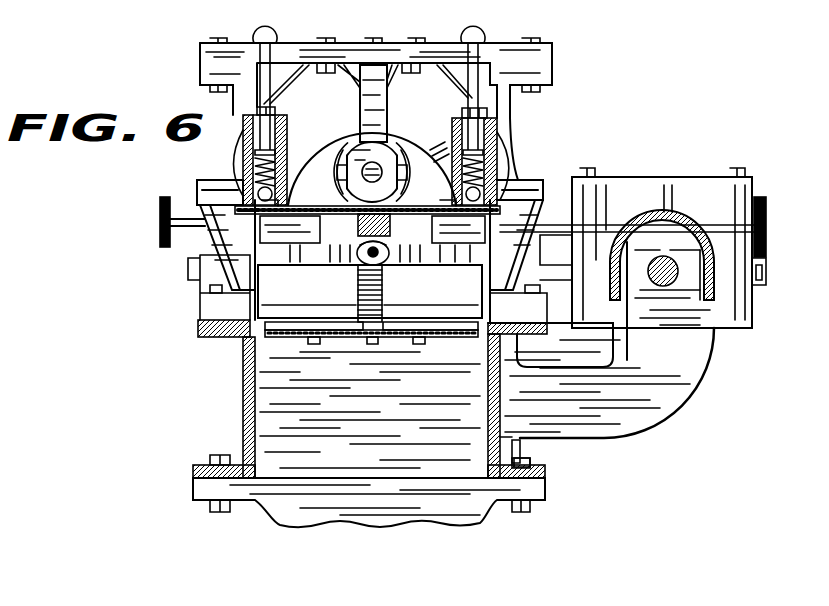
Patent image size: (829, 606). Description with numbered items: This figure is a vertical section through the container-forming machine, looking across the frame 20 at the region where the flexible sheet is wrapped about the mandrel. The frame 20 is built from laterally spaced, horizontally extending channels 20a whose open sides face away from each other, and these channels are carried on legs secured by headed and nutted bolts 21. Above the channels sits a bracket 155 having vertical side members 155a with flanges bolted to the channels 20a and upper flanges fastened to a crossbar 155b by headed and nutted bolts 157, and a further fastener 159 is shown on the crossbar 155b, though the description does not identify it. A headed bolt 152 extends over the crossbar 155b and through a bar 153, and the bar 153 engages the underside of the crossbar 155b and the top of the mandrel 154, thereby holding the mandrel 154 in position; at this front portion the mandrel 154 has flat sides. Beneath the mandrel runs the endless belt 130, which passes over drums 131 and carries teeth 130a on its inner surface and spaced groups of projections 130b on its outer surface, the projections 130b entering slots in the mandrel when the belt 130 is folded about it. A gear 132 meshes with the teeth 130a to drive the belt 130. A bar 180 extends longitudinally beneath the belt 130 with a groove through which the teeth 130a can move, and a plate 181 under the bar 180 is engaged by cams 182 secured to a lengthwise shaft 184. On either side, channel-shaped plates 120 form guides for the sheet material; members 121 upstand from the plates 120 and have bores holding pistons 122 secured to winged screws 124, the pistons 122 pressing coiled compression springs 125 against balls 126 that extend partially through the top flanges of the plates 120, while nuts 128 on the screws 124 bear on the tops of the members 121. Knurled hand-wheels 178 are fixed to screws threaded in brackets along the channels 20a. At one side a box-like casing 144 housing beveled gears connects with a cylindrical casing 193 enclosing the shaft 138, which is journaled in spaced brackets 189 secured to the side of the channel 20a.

The frame 20 is at (243, 415).
The channels 20a is at (243, 395).
The headed and nutted bolts 21 is at (215, 455).
The plates 120 is at (230, 182).
The members 121 is at (290, 128).
The pistons 122 is at (453, 148).
The screws 124 is at (282, 60).
The coiled compression springs 125 is at (240, 165).
The balls 126 is at (503, 224).
The nuts 128 is at (257, 112).
The endless belt 130 is at (300, 222).
The teeth 130a is at (410, 208).
The projections 130b is at (370, 345).
The drums 131 is at (295, 320).
The gear 132 is at (383, 297).
The shaft 138 is at (668, 288).
The box-like casing 144 is at (724, 178).
The headed bolt 152 is at (369, 37).
The bar 153 is at (387, 110).
The mandrel 154 is at (365, 142).
The bracket 155 is at (556, 51).
The vertical side members 155a is at (512, 109).
The crossbar 155b is at (256, 43).
The headed and nutted bolts 157 is at (213, 37).
The bolt 159 is at (417, 37).
The hand-wheels 178 is at (160, 223).
The bar 180 is at (333, 168).
The plate 181 is at (384, 230).
The cams 182 is at (390, 258).
The shaft 184 is at (358, 255).
The brackets 189 is at (678, 400).
The cylindrical casing 193 is at (599, 304).